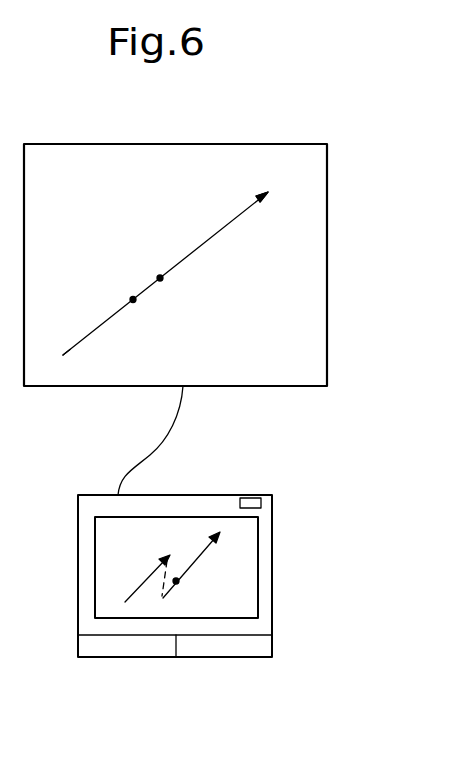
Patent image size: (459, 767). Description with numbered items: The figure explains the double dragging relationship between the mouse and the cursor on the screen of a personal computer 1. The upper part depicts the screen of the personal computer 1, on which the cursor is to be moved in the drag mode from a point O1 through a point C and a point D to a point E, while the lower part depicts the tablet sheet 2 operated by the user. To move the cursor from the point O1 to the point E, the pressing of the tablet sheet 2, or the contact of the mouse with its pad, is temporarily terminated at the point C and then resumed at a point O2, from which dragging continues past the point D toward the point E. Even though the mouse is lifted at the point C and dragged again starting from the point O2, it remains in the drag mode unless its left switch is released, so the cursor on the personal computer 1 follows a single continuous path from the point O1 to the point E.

The personal computer 1 is at (209, 265).
The tablet sheet 2 is at (206, 576).
The point C is at (124, 290).
The point D is at (152, 267).
The point E is at (260, 182).
The point O1 is at (54, 358).
The point O2 is at (175, 596).